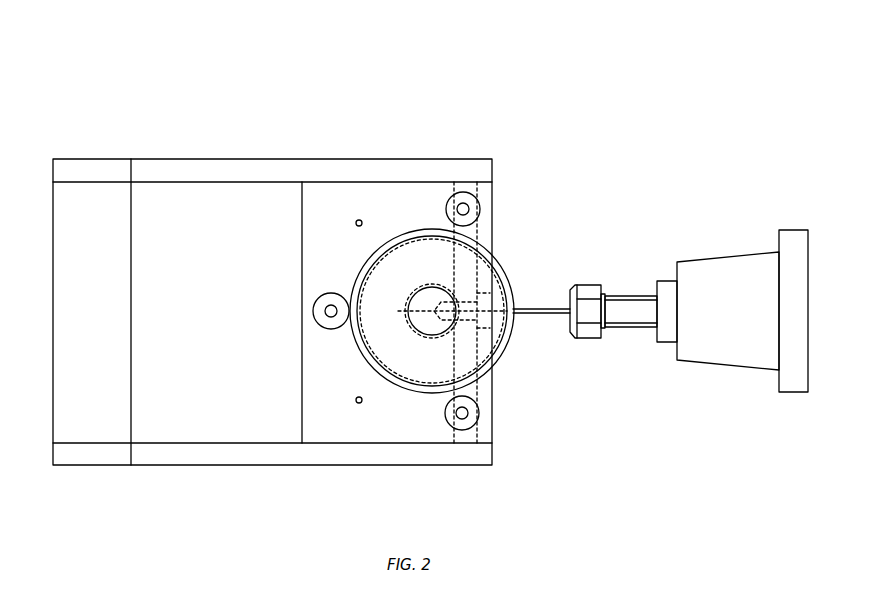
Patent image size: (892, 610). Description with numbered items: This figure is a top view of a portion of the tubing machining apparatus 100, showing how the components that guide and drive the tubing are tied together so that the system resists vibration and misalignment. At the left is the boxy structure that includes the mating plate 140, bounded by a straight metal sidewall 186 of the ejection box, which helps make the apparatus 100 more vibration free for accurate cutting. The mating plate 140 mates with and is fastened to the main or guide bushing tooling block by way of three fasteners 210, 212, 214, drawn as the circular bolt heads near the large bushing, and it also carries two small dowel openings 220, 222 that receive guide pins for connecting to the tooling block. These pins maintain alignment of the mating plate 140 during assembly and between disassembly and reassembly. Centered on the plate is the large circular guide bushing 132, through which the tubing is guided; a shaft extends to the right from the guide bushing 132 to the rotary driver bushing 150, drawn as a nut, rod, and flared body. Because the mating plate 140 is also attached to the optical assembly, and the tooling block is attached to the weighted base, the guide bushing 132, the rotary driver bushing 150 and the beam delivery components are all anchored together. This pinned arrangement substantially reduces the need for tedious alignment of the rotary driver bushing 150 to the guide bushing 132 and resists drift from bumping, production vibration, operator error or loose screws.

The tubing machining apparatus 100 is at (712, 98).
The guide bushing 132 is at (467, 323).
The mating plate 140 is at (381, 430).
The rotary driver bushing 150 is at (731, 255).
The sidewall 186 is at (259, 451).
The fastener 210 is at (331, 310).
The fastener 212 is at (468, 206).
The fastener 214 is at (468, 417).
The dowel opening 220 is at (355, 223).
The dowel opening 222 is at (355, 400).